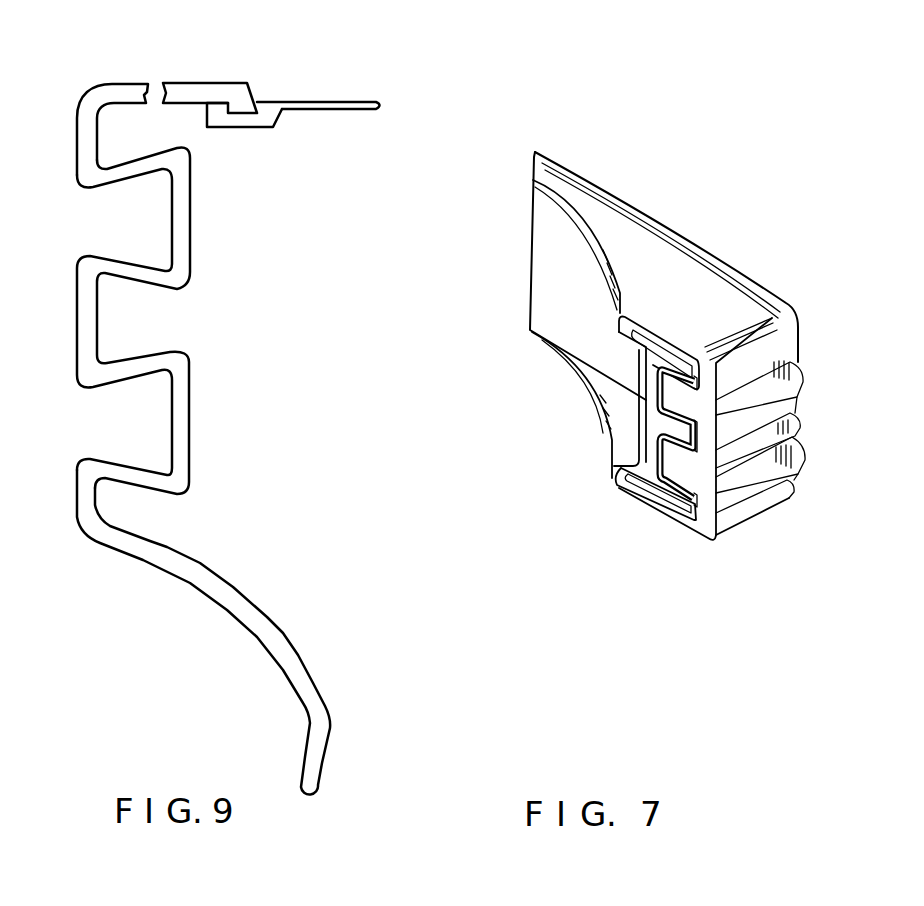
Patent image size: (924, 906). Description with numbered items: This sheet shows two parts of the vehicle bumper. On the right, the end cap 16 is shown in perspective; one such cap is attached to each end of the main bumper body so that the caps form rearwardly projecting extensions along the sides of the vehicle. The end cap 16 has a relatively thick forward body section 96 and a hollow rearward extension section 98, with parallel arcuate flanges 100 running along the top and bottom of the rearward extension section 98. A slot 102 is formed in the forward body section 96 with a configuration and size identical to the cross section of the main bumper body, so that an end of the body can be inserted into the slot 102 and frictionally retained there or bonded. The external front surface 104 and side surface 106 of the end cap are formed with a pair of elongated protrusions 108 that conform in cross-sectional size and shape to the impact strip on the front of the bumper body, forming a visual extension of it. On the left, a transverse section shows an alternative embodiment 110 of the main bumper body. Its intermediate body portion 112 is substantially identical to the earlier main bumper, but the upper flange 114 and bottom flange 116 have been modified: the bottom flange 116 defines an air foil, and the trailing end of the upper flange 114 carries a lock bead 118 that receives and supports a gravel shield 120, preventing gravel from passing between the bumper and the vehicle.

In FIG. 7, the end cap 16 is at (700, 219).
In FIG. 7, the forward body section 96 is at (707, 515).
In FIG. 7, the rearward extension section 98 is at (569, 310).
In FIG. 7, the arcuate flanges 100 is at (602, 216).
In FIG. 7, the slot 102 is at (652, 467).
In FIG. 7, the front surface 104 is at (770, 433).
In FIG. 7, the side surface 106 is at (763, 288).
In FIG. 7, the elongated protrusions 108 is at (778, 400).
In FIG. 9, the alternative embodiment of the main bumper body 110 is at (216, 329).
In FIG. 9, the intermediate body portion 112 is at (78, 310).
In FIG. 9, the upper flange 114 is at (180, 80).
In FIG. 9, the bottom flange 116 is at (190, 590).
In FIG. 9, the lock bead 118 is at (249, 92).
In FIG. 9, the gravel shield 120 is at (317, 112).